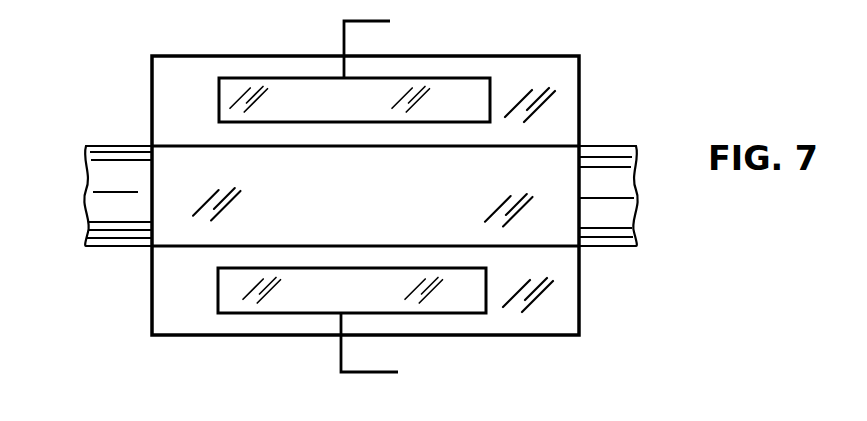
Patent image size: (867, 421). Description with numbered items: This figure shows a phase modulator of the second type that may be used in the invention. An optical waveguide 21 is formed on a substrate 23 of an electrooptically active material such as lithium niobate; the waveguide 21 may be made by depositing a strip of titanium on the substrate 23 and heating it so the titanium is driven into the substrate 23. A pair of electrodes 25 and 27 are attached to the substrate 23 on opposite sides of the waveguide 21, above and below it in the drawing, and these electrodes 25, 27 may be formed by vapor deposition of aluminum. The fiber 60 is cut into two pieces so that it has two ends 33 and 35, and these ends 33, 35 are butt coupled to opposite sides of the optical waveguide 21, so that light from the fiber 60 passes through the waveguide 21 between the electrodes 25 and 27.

The optical waveguide 21 is at (160, 150).
The substrate 23 is at (578, 310).
The electrode 25 is at (442, 315).
The electrode 27 is at (490, 97).
The fiber end 33 is at (148, 246).
The fiber end 35 is at (581, 161).
The fiber 60 is at (100, 247).